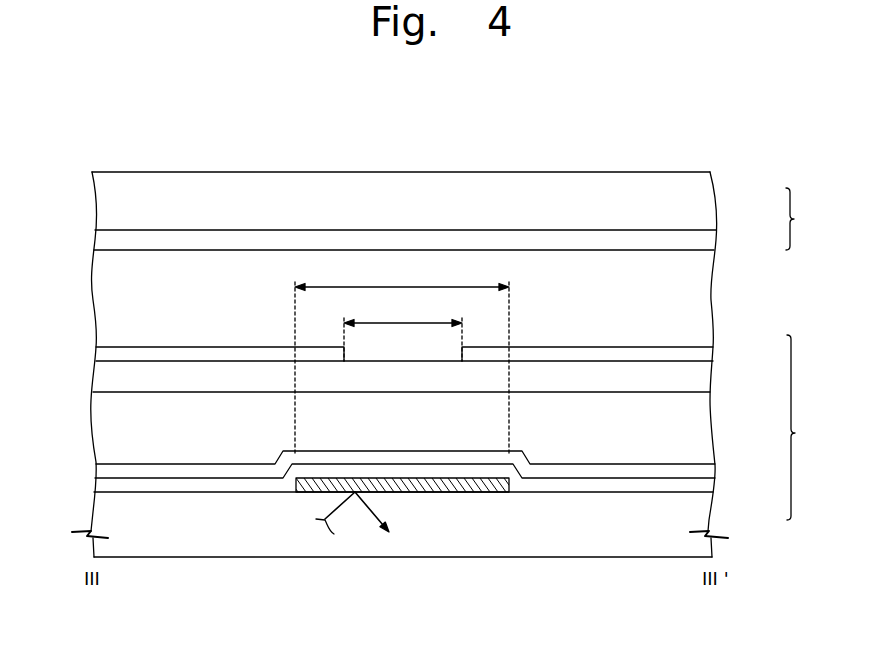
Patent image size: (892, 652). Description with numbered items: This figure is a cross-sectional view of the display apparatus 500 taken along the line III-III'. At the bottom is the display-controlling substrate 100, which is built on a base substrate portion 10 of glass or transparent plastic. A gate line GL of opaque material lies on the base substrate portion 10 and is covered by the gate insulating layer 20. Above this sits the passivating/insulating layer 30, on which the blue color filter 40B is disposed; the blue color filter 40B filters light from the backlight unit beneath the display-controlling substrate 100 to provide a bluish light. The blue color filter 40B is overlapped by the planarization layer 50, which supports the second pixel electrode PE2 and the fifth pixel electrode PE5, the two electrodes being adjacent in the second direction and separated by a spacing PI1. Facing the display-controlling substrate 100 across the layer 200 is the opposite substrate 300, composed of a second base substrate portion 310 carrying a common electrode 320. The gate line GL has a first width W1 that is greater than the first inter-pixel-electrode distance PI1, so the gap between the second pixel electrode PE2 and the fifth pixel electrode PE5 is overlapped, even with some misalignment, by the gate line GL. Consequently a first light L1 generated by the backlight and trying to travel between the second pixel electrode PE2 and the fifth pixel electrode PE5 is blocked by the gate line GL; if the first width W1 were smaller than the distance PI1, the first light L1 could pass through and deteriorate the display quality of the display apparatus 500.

The display apparatus 500 is at (698, 157).
The second base substrate portion 310 is at (704, 198).
The common electrode 320 is at (704, 242).
The opposite substrate 300 is at (809, 219).
The liquid crystal layer 200 is at (704, 302).
The second pixel electrode PE2 is at (107, 352).
The fifth pixel electrode PE5 is at (713, 350).
The planarization layer 50 is at (705, 376).
The blue color filter 40B is at (705, 432).
The display-controlling substrate 100 is at (809, 427).
The passivating/insulating layer 30 is at (713, 470).
The gate insulating layer 20 is at (705, 485).
The base substrate portion 10 is at (705, 510).
The gate line GL is at (435, 491).
The first width W1 is at (402, 356).
The first inter-pixel-electrode distance PI1 is at (403, 328).
The first light L1 is at (345, 511).